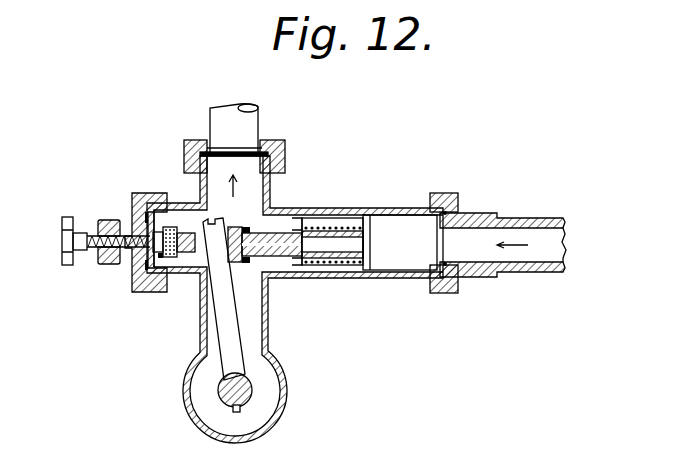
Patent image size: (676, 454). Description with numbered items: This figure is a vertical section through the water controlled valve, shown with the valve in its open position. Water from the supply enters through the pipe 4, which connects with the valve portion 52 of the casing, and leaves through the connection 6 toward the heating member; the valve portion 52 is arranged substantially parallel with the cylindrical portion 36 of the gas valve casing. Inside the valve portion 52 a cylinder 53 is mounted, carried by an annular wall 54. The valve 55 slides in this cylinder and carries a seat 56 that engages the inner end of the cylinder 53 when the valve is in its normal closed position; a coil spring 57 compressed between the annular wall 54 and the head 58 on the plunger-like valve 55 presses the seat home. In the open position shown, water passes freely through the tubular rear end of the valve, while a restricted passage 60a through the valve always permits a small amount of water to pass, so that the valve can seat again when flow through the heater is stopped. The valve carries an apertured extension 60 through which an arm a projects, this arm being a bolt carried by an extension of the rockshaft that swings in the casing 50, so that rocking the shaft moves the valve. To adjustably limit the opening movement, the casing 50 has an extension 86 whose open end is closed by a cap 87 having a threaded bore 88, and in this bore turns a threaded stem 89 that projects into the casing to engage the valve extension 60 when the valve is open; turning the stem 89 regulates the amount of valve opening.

The pipe 4 is at (497, 230).
The connection 6 is at (252, 127).
The cylindrical portion 36 is at (246, 226).
The casing 50 is at (203, 298).
The valve portion 52 is at (305, 225).
The cylinder 53 is at (318, 262).
The annular wall 54 is at (307, 262).
The valve 55 is at (300, 258).
The seat 56 is at (263, 258).
The coil spring 57 is at (340, 262).
The head 58 is at (356, 230).
The apertured extension 60 is at (185, 233).
The restricted passage 60a is at (270, 233).
The extension 86 is at (181, 203).
The cap 87 is at (141, 195).
The threaded bore 88 is at (105, 266).
The threaded stem 89 is at (93, 241).
The arm a is at (227, 351).